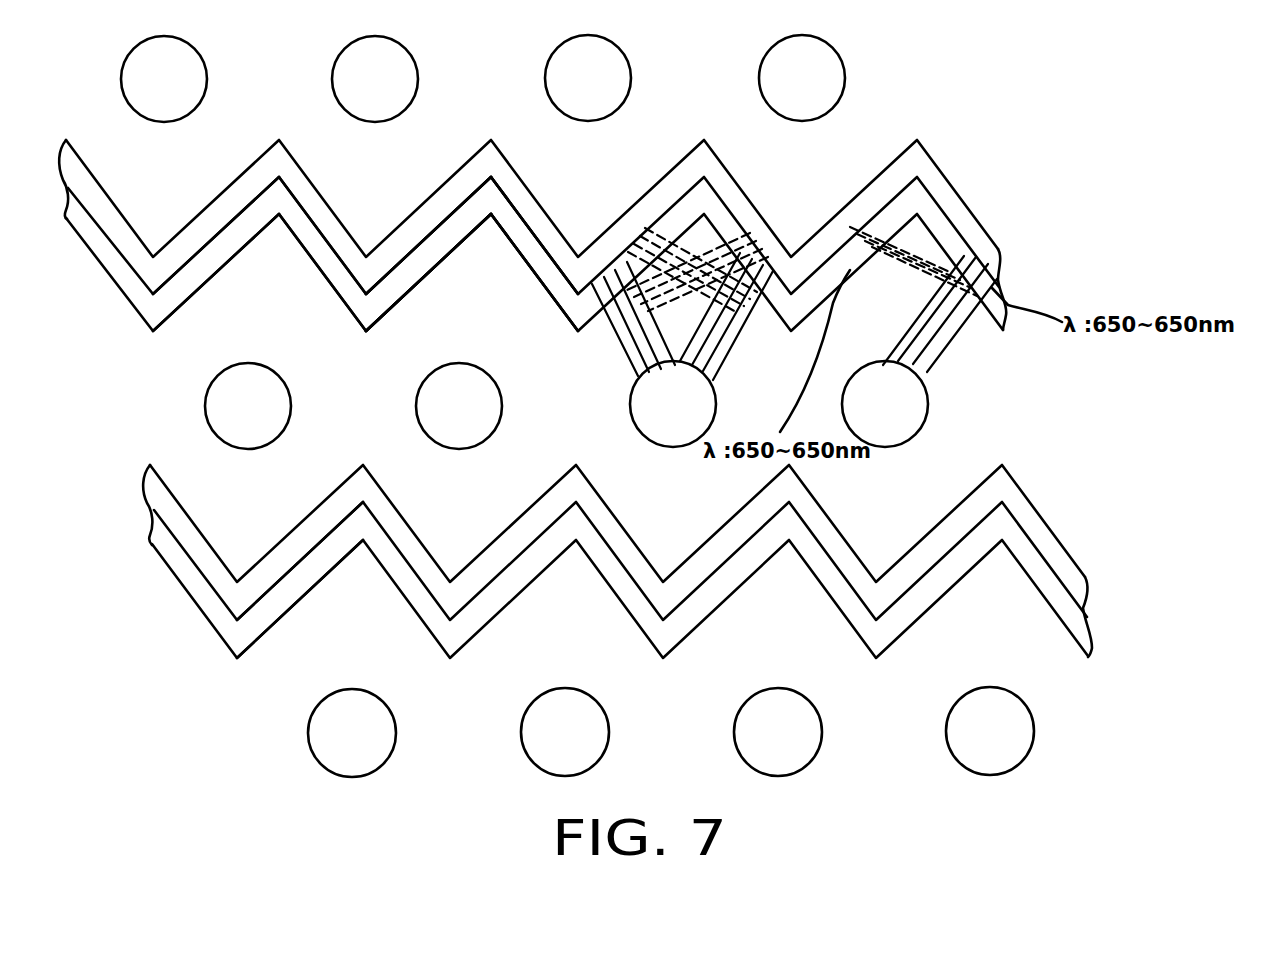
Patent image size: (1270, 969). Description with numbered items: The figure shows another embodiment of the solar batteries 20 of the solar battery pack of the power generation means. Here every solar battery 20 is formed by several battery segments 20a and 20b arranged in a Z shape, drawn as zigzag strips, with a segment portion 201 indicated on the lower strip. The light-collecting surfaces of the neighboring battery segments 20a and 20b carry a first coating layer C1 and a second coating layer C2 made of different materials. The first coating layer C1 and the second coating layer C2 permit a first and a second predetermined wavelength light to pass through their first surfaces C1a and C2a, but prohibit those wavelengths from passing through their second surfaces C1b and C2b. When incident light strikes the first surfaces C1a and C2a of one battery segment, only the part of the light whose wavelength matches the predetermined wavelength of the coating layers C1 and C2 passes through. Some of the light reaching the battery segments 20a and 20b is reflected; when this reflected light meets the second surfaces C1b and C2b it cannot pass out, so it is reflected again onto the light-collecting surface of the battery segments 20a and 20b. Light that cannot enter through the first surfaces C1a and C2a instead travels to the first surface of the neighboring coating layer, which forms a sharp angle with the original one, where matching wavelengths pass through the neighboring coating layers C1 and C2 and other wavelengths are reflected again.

The solar battery 20 is at (1055, 592).
The prism 201 is at (294, 587).
The battery segment 20a is at (327, 267).
The battery segment 20b is at (197, 273).
The first coating layer C1 is at (542, 247).
The first surface of first coating layer C1a is at (513, 247).
The second surface of first coating layer C1b is at (525, 189).
The second coating layer C2 is at (463, 243).
The first surface of second coating layer C2a is at (390, 317).
The second surface of second coating layer C2b is at (400, 293).